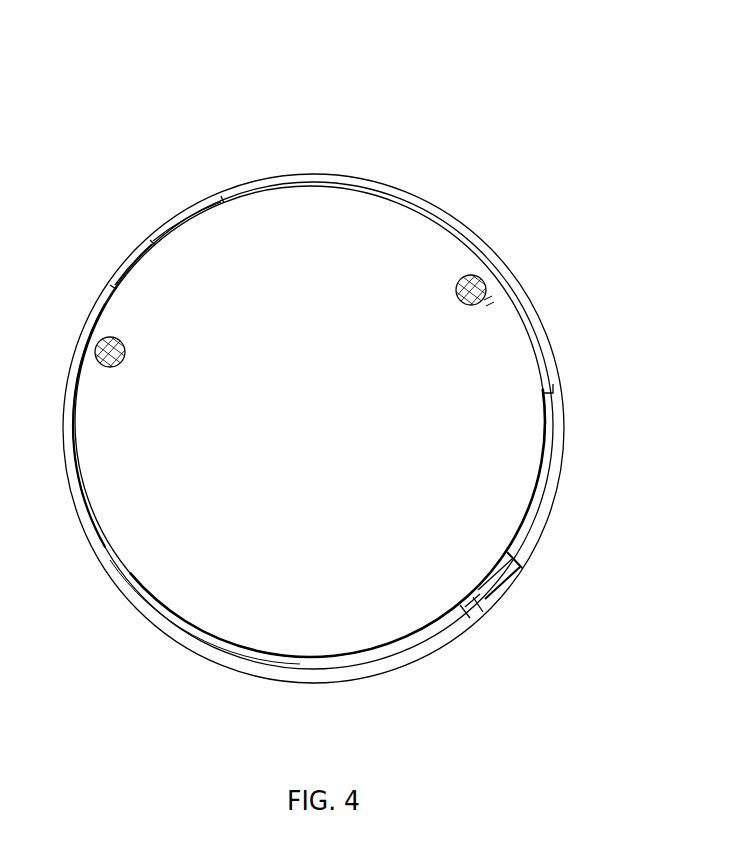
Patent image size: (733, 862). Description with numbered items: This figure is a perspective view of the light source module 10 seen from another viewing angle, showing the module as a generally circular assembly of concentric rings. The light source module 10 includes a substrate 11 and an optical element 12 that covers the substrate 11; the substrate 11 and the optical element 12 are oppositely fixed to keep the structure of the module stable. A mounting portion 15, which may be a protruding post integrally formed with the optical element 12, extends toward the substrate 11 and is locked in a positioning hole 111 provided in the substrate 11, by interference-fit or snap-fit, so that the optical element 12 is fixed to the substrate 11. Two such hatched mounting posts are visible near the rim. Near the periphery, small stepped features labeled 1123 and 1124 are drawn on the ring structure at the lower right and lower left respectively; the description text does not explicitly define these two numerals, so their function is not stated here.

The light source module 10 is at (439, 41).
The substrate 11 is at (528, 412).
The optical element 12 is at (368, 176).
The mounting portion 15 is at (480, 277).
The positioning hole 111 is at (490, 298).
The latch block 1123 is at (507, 593).
The strap joint 1124 is at (112, 580).